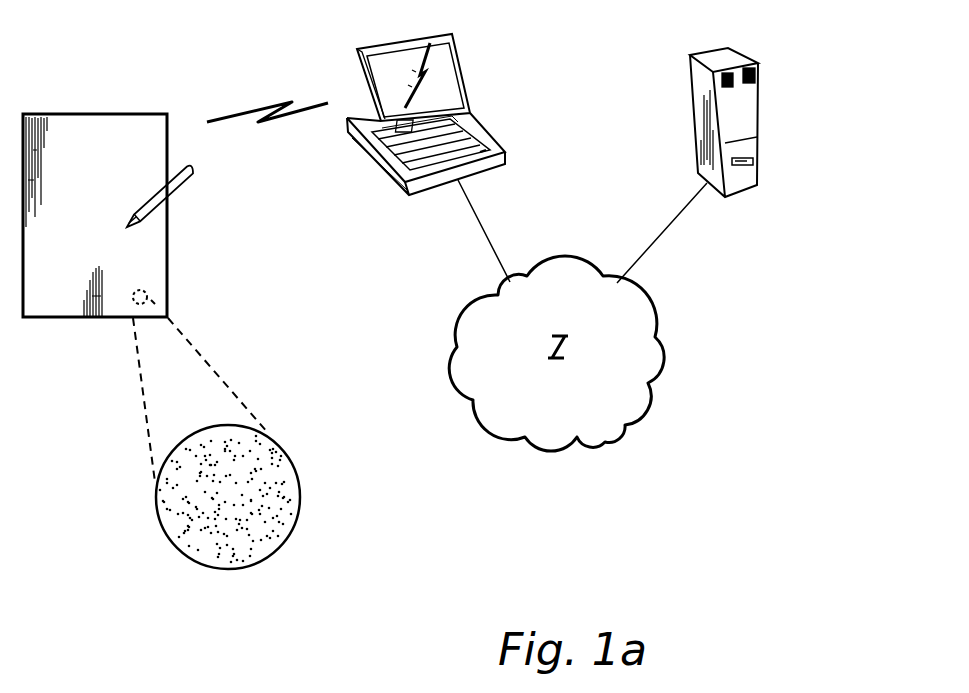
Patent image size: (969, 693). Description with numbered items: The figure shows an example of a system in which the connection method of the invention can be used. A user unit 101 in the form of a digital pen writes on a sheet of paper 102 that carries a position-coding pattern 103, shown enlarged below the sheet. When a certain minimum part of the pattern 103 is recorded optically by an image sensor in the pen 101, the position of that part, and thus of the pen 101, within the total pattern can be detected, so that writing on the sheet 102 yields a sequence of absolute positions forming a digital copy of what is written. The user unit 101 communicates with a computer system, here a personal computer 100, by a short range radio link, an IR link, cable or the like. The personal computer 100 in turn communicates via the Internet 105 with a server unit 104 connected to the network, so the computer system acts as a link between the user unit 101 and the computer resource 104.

The personal computer 100 is at (469, 78).
The user unit 101 is at (192, 172).
The sheet of paper 102 is at (152, 253).
The position-coding pattern 103 is at (258, 562).
The server unit 104 is at (760, 98).
The Internet 105 is at (645, 412).